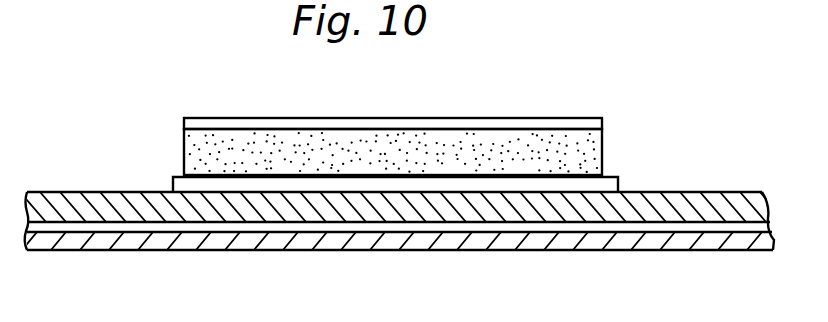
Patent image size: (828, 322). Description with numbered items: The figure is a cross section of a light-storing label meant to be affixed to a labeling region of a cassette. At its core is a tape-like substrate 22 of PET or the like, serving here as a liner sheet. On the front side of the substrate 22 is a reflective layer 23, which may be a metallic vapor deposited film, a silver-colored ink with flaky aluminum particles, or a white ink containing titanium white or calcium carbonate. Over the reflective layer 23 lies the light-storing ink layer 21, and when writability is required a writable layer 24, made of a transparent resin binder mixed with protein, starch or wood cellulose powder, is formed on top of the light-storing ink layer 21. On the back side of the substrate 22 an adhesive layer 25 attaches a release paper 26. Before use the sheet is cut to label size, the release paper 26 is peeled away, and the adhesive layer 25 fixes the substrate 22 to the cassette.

The light-storing ink layer 21 is at (603, 152).
The substrate 22 is at (733, 190).
The reflective layer 23 is at (618, 184).
The writable layer 24 is at (603, 120).
The adhesive layer 25 is at (657, 233).
The release paper 26 is at (737, 235).